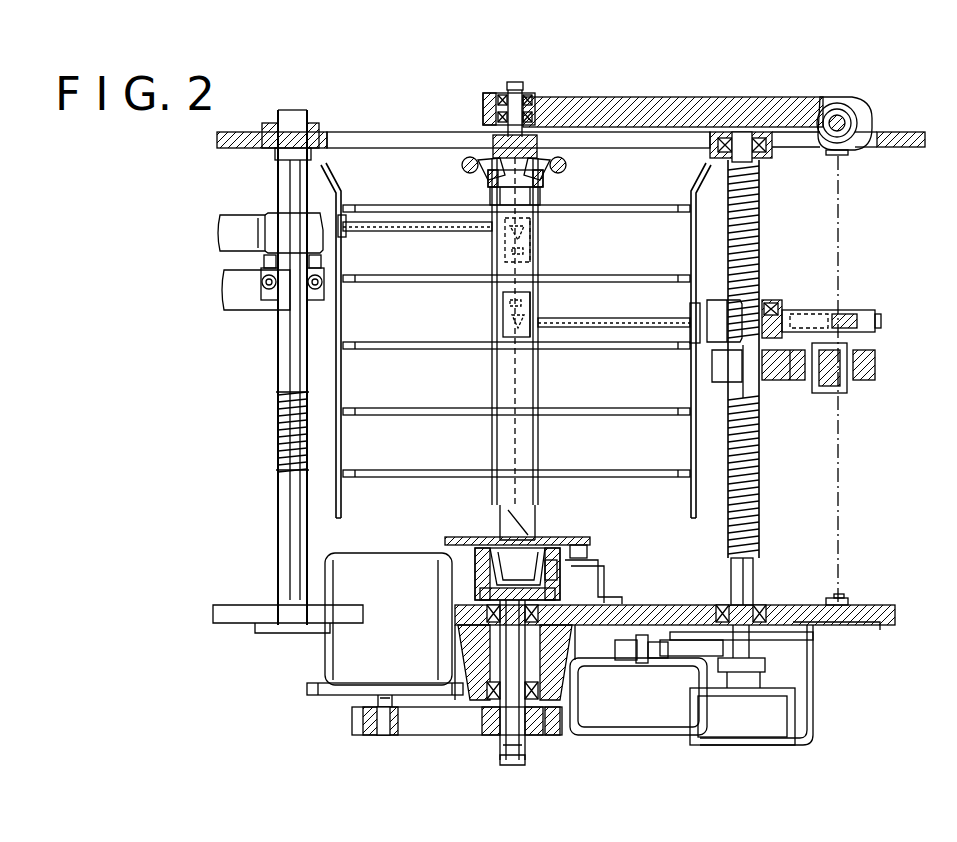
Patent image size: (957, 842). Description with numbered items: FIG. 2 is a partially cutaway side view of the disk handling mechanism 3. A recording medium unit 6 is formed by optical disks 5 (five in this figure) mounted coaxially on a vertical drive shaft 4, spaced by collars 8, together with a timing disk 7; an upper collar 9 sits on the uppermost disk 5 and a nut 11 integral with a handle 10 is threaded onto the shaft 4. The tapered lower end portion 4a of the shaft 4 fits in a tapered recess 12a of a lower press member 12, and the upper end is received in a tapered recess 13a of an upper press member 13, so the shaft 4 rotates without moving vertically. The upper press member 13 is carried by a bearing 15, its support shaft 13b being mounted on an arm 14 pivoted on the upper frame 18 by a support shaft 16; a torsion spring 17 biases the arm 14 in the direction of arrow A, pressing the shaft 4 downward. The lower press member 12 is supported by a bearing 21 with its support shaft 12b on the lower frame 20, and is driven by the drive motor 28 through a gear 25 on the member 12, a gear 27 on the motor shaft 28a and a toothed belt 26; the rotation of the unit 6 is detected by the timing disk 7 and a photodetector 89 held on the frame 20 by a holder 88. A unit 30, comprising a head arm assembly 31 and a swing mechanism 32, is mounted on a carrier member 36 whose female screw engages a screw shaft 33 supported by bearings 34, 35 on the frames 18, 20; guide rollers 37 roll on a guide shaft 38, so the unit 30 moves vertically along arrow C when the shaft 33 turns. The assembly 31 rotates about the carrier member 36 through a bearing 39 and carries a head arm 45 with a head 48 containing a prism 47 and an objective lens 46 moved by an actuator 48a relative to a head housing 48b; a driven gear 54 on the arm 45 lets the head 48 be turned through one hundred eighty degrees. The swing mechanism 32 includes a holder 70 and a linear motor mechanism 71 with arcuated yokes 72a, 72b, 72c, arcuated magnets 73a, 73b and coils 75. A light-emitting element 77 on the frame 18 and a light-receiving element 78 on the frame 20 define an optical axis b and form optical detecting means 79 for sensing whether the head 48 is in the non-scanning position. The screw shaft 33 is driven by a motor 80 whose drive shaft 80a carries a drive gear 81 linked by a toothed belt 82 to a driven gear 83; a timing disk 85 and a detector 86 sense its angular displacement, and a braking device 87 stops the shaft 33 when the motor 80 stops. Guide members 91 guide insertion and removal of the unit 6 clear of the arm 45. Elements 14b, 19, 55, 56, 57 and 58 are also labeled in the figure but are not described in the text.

The disk handling mechanism 3 is at (222, 185).
The vertical drive shaft 4 is at (533, 518).
The lower end portion 4a is at (490, 560).
The optical memories 5 is at (642, 205).
The recording medium unit 6 is at (495, 440).
The timing disk 7 is at (586, 537).
The collars 8 is at (495, 380).
The upper collar 9 is at (540, 194).
The handle 10 is at (462, 165).
The nut 11 is at (488, 180).
The lower press member 12 is at (482, 576).
The tapered hole or recess 12a is at (556, 570).
The support shaft 12b is at (500, 728).
The upper press member 13 is at (560, 160).
The tapered hole or recess 13a is at (492, 142).
The support shaft 13b is at (536, 108).
The arm 14 is at (652, 106).
The collar ring 14b is at (550, 176).
The bearing 15 is at (503, 102).
The support shaft 16 is at (860, 120).
The torsion spring 17 is at (826, 106).
The upper frame 18 is at (905, 134).
The top plate 19 is at (372, 133).
The lower frame 20 is at (680, 605).
The bearing 21 is at (570, 706).
The gear 25 is at (546, 736).
The toothed belt 26 is at (437, 736).
The gear 27 is at (400, 736).
The recording medium unit drive motor 28 is at (337, 685).
The shaft 28a is at (380, 722).
The unit 30 is at (222, 262).
The head arm assembly 31 is at (243, 233).
The swing mechanism 32 is at (230, 302).
The screw shaft 33 is at (278, 432).
The bearing 34 is at (750, 158).
The bearing 35 is at (760, 605).
The carrier member 36 is at (752, 392).
The guide rollers 37 is at (270, 295).
The guide shaft 38 is at (281, 380).
The bearing 39 is at (772, 299).
The head arm 45 is at (428, 232).
The objective lens 46 is at (504, 262).
The prism 47 is at (531, 228).
The head 48 is at (538, 248).
The actuator 48a is at (503, 314).
The head housing 48b is at (538, 300).
The driven gear 54 is at (342, 240).
The actuating rod 55 is at (786, 310).
The rod slot 56 is at (812, 308).
The rod end piece 57 is at (842, 312).
The rod cap 58 is at (872, 310).
The holder 70 is at (775, 381).
The linear motor mechanism 71 is at (878, 360).
The arcuated yoke 72a is at (766, 400).
The arcuated yoke 72b is at (826, 392).
The arcuated yoke 72c is at (880, 382).
The arcuated magnet 73a is at (798, 382).
The arcuated magnet 73b is at (858, 392).
The coils 75 is at (836, 398).
The light-emitting element 77 is at (843, 155).
The light-receiving element 78 is at (846, 604).
The optical detecting means 79 is at (840, 595).
The motor 80 is at (637, 728).
The drive shaft 80a is at (632, 660).
The drive gear 81 is at (646, 634).
The toothed belt 82 is at (676, 658).
The driven gear 83 is at (762, 658).
The timing disk 85 is at (788, 640).
The detector 86 is at (830, 628).
The braking device 87 is at (752, 735).
The holder 88 is at (596, 592).
The photodetector 89 is at (588, 553).
The guide members 91 is at (340, 512).
The arrow A is at (738, 60).
The optical axis b is at (840, 240).
The arrow C is at (312, 322).